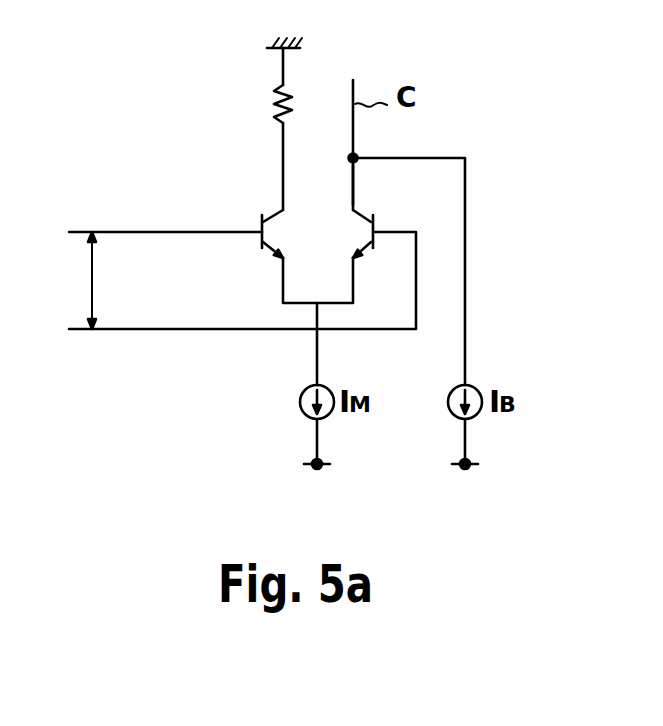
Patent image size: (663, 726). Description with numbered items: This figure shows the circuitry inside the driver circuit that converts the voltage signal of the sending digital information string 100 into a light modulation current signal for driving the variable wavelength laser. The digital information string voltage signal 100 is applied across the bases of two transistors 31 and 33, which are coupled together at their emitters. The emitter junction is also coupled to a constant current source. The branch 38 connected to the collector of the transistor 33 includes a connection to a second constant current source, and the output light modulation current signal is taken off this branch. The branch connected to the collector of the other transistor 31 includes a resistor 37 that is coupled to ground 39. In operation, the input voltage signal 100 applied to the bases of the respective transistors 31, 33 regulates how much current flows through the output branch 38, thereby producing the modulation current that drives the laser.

The ground 39 is at (303, 46).
The resistor 37 is at (292, 99).
The transistor 31 is at (262, 222).
The branch 38 is at (355, 185).
The transistor 33 is at (375, 222).
The digital information string voltage signal 100 is at (65, 280).